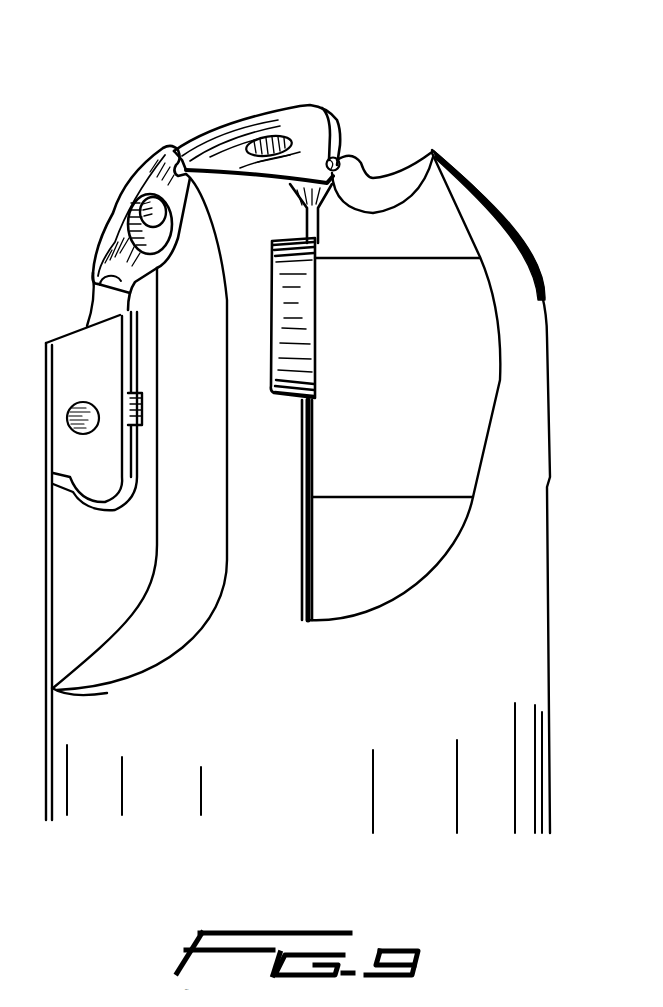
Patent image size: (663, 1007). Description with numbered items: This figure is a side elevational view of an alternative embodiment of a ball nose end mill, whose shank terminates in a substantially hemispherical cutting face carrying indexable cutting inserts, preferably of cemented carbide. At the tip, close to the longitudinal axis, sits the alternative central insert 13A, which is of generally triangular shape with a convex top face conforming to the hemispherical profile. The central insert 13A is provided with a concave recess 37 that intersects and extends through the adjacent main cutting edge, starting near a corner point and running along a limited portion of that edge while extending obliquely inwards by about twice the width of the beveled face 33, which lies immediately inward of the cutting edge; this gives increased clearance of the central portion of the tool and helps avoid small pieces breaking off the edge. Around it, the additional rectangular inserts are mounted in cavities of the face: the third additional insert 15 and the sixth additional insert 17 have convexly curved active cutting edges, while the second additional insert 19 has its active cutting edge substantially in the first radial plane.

The central insert 13A is at (215, 106).
The third additional insert 15 is at (510, 212).
The sixth additional insert 17 is at (152, 175).
The second additional insert 19 is at (300, 338).
The beveled face 33 is at (328, 116).
The recess 37 is at (338, 163).